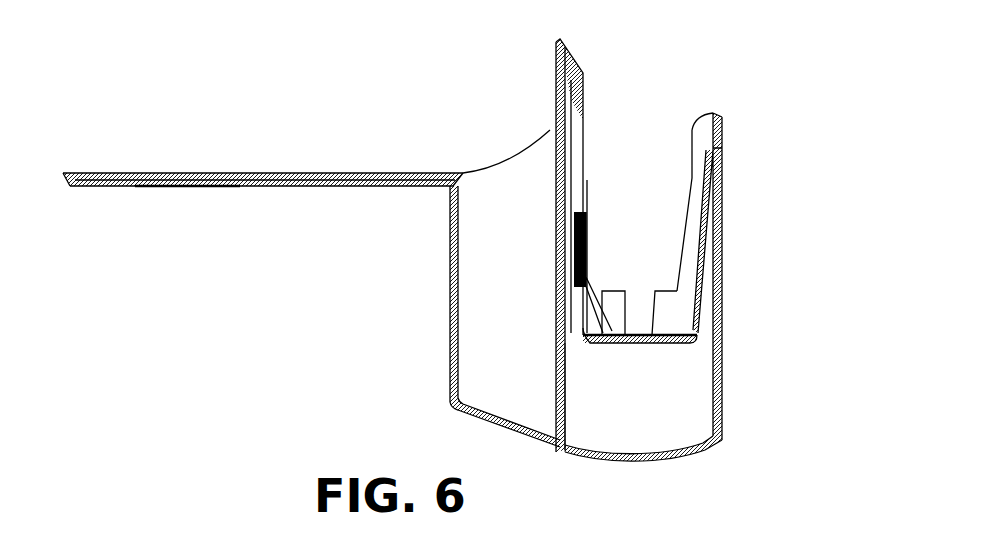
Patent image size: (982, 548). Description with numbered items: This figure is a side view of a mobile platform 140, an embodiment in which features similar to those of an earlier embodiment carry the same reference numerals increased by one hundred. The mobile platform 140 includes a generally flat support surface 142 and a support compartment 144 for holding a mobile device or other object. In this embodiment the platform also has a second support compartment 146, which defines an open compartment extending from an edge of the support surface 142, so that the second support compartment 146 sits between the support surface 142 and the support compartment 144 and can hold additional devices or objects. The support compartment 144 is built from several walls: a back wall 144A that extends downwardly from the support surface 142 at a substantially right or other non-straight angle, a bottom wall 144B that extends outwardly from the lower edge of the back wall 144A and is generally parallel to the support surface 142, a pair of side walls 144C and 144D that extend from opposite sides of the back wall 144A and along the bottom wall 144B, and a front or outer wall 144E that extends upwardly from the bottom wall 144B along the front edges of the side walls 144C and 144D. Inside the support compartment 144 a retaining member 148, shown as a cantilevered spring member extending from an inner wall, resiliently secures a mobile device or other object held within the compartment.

The mobile platform 140 is at (757, 44).
The support surface 142 is at (267, 173).
The support compartment 144 is at (637, 278).
The back wall 144A is at (557, 92).
The bottom wall 144B is at (640, 463).
The side wall 144C is at (652, 428).
The side wall 144D is at (665, 290).
The front or outer wall 144E is at (720, 353).
The second support compartment 146 is at (497, 140).
The retaining member 148 is at (588, 250).